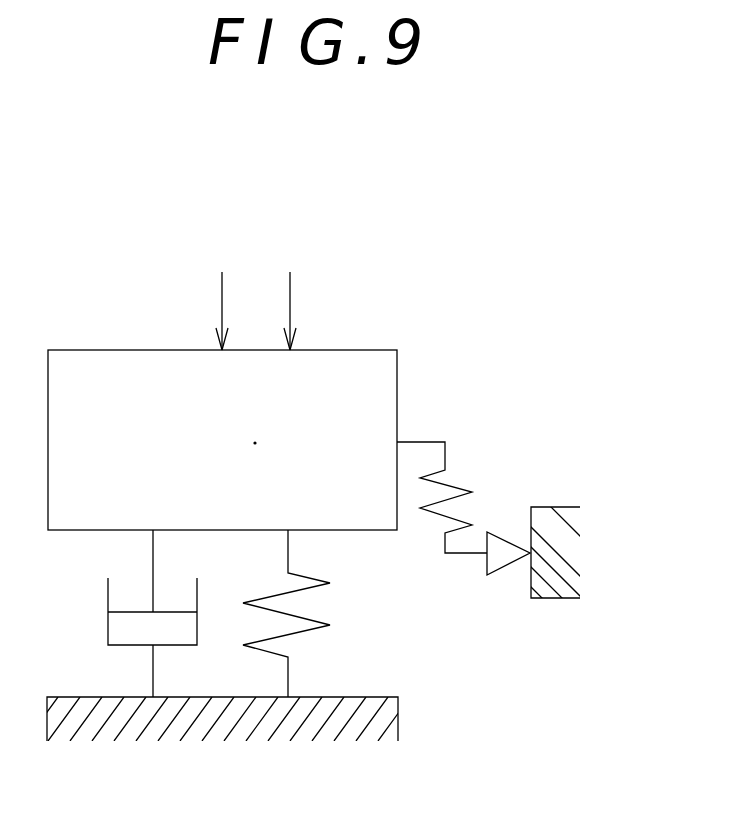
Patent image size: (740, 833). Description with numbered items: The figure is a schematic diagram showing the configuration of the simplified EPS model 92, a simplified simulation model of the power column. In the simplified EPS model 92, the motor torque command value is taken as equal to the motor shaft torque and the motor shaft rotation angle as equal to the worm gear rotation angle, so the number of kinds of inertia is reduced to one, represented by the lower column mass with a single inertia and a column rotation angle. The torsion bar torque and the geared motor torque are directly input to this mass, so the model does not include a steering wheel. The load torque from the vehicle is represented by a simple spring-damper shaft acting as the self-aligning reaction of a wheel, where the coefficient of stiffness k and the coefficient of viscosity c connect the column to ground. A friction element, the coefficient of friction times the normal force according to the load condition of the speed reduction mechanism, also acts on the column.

The simplified EPS model 92 is at (445, 317).
The coefficient of viscosity c is at (142, 613).
The coefficient of stiffness k is at (296, 613).